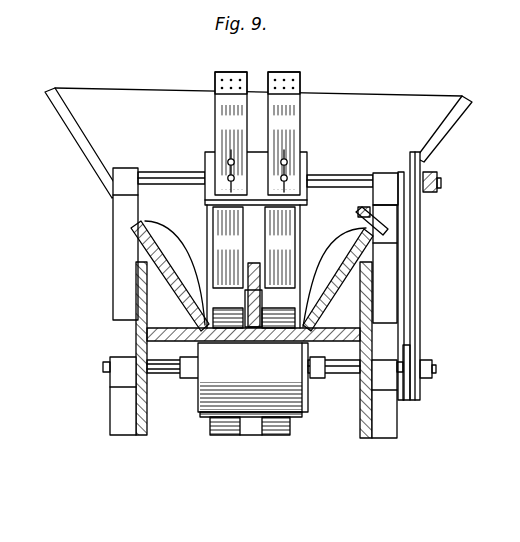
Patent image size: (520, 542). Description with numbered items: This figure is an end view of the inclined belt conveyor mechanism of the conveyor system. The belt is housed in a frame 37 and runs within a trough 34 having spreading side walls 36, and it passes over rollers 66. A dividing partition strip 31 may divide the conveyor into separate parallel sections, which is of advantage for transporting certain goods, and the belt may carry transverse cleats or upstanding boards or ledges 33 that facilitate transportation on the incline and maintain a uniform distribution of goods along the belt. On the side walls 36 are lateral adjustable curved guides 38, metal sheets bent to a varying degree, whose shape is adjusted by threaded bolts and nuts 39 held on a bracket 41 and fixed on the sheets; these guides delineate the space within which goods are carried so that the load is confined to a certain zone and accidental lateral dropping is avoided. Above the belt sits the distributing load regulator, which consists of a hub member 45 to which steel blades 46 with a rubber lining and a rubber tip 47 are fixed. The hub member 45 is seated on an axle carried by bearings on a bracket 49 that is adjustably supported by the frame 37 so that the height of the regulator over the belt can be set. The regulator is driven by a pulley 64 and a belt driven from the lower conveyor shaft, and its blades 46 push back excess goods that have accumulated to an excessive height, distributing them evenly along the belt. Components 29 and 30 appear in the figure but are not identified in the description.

The bearing block 29 is at (210, 420).
The bearing block 30 is at (290, 419).
The dividing partition strip 31 is at (250, 341).
The transverse cleats or upstanding boards or ledges 33 is at (277, 436).
The trough 34 is at (160, 285).
The spreading side walls 36 is at (136, 322).
The frame 37 is at (137, 342).
The lateral adjustable curved guides 38 is at (322, 255).
The threaded bolts and nuts 39 is at (362, 212).
The bracket 41 is at (385, 232).
The hub member 45 is at (303, 162).
The steel blades 46 is at (290, 127).
The rubber tip 47 is at (288, 78).
The bracket 49 is at (390, 288).
The pulley 64 is at (420, 172).
The rollers 66 is at (305, 402).